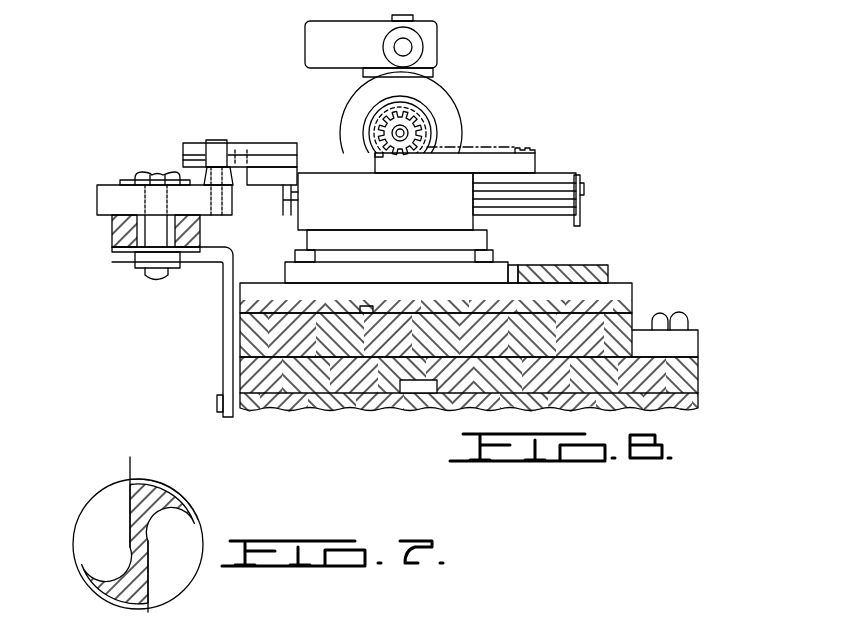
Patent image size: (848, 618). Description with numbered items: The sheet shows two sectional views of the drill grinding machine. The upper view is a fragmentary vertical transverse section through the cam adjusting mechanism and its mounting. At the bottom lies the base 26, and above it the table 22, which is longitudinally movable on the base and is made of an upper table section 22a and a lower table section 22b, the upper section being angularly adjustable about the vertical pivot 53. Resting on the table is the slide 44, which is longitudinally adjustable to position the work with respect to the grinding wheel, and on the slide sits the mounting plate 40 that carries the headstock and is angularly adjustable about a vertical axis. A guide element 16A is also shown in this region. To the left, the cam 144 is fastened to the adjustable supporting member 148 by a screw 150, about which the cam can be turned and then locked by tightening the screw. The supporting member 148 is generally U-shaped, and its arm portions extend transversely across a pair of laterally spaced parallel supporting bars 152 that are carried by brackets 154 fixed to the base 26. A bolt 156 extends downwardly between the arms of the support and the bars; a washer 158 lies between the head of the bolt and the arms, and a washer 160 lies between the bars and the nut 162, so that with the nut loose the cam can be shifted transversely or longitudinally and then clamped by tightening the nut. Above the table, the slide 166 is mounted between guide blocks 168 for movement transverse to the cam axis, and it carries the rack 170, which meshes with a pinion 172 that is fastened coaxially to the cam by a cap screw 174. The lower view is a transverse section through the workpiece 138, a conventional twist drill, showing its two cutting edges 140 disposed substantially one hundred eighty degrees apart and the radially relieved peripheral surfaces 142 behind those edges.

In FIG. 6, the guide rail 16A is at (268, 158).
In FIG. 6, the table 22 is at (255, 320).
In FIG. 6, the upper table section 22a is at (636, 320).
In FIG. 6, the lower table section 22b is at (690, 374).
In FIG. 6, the base 26 is at (692, 402).
In FIG. 6, the mounting plate 40 is at (590, 270).
In FIG. 6, the slide 44 is at (633, 292).
In FIG. 6, the vertical pivot 53 is at (688, 321).
In FIG. 7, the workpiece 138 is at (210, 515).
In FIG. 7, the cutting edges 140 is at (130, 457).
In FIG. 7, the peripheral surfaces 142 is at (180, 492).
In FIG. 6, the cam 144 is at (243, 143).
In FIG. 6, the adjustable supporting member 148 is at (97, 200).
In FIG. 7, the adjustable supporting member 148 is at (252, 617).
In FIG. 6, the screw 150 is at (214, 140).
In FIG. 6, the supporting bars 152 is at (112, 232).
In FIG. 7, the supporting bars 152 is at (333, 617).
In FIG. 6, the brackets 154 is at (228, 357).
In FIG. 6, the bolt 156 is at (136, 172).
In FIG. 6, the washer 158 is at (120, 182).
In FIG. 7, the washer 158 is at (232, 617).
In FIG. 6, the washer 160 is at (112, 250).
In FIG. 6, the nut 162 is at (140, 264).
In FIG. 6, the slide 166 is at (570, 173).
In FIG. 6, the guide blocks 168 is at (402, 210).
In FIG. 6, the rack 170 is at (528, 150).
In FIG. 6, the pinion 172 is at (418, 137).
In FIG. 6, the cap screw 174 is at (406, 130).